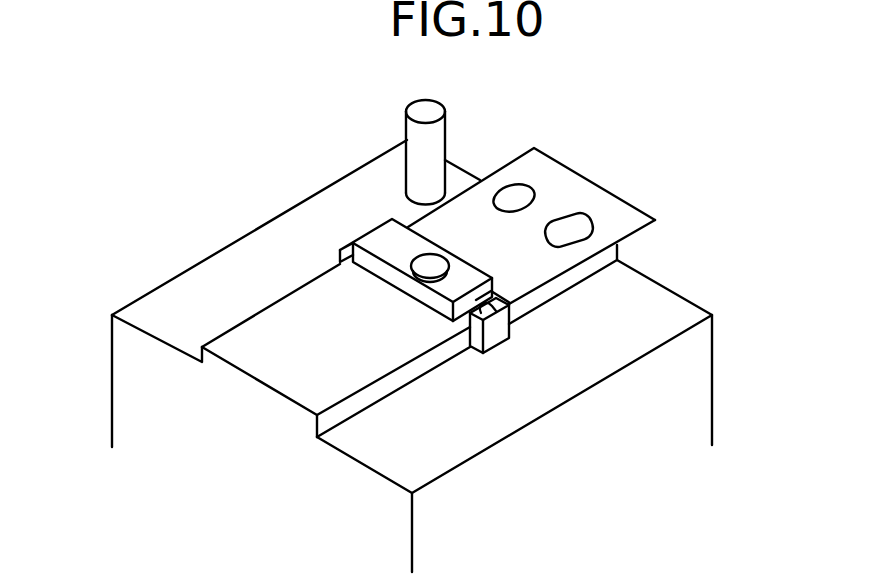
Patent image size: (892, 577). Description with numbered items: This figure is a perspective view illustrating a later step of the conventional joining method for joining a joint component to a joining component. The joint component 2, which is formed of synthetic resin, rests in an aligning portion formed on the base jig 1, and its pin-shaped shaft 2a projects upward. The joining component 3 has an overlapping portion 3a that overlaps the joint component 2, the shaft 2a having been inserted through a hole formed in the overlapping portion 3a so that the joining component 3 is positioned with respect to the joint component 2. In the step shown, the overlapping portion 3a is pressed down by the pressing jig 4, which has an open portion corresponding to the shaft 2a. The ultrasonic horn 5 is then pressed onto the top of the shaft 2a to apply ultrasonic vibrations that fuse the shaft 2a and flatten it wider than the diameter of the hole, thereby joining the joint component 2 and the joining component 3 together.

The base jig 1 is at (243, 268).
The joint component 2 is at (337, 233).
The shaft 2a is at (423, 272).
The joining component 3 is at (510, 287).
The overlapping portion 3a is at (492, 313).
The pressing jig 4 is at (464, 281).
The ultrasonic horn 5 is at (413, 131).